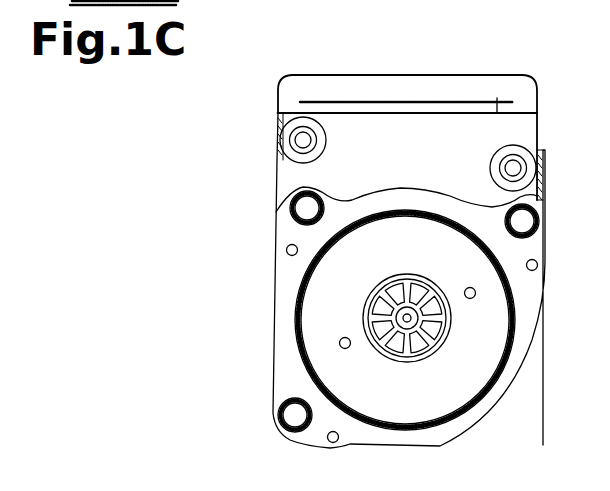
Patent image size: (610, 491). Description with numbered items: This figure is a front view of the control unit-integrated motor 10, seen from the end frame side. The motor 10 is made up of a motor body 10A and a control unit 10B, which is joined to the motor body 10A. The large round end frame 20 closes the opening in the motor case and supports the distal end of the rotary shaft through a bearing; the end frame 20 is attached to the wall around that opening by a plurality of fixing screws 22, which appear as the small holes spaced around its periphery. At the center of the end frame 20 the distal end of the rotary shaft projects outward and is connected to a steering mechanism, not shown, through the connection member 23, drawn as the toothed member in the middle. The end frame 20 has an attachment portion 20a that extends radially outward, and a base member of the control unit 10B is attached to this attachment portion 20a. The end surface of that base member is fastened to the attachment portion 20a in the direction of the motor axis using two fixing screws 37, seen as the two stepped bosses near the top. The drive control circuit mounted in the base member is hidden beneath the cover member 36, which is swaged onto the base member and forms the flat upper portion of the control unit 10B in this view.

The motor 10 is at (199, 118).
The motor body 10A is at (502, 405).
The control unit 10B is at (359, 75).
The end frame 20 is at (276, 333).
The attachment portion 20a is at (497, 112).
The fixing screws 22 is at (285, 250).
The connection member 23 is at (407, 280).
The cover member 36 is at (431, 78).
The fixing screws 37 is at (287, 128).